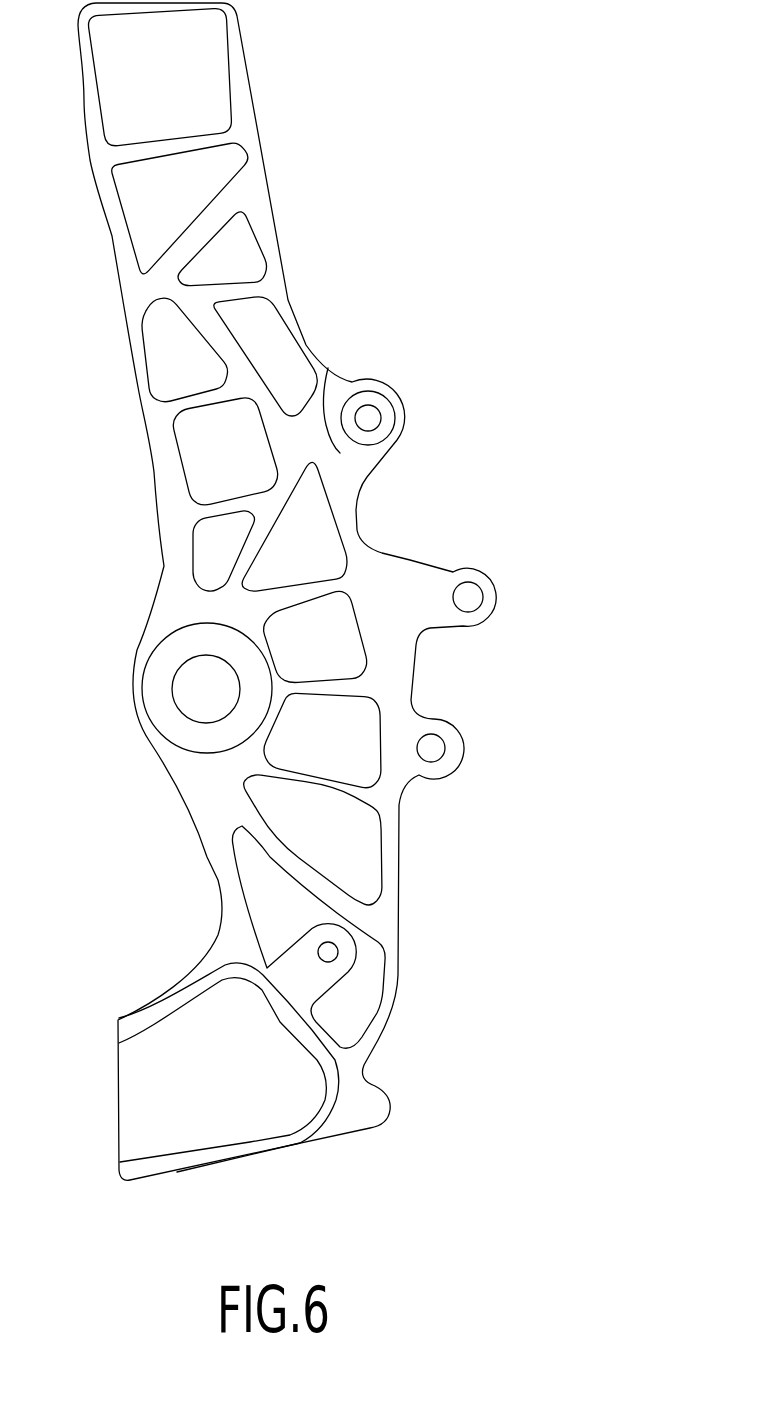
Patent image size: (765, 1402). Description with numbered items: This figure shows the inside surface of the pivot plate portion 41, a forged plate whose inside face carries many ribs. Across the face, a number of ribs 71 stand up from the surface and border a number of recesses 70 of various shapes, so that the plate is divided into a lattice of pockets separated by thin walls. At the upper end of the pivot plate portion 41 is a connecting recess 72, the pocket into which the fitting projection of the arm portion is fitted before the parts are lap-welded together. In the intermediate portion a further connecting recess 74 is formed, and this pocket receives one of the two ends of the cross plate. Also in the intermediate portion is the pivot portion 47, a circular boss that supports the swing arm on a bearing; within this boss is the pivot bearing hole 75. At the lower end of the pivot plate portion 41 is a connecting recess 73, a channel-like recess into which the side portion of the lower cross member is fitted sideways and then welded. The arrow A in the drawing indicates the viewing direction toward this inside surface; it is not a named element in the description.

The pivot plate portion 41 is at (283, 134).
The connecting recess 72 is at (199, 66).
The recesses 70 is at (130, 219).
The ribs 71 is at (252, 283).
The connecting recess 74 is at (193, 458).
The pivot portion 47 is at (160, 660).
The pivot bearing hole 75 is at (190, 697).
The connecting recess 73 is at (225, 1125).
The viewing direction arrow A is at (461, 475).